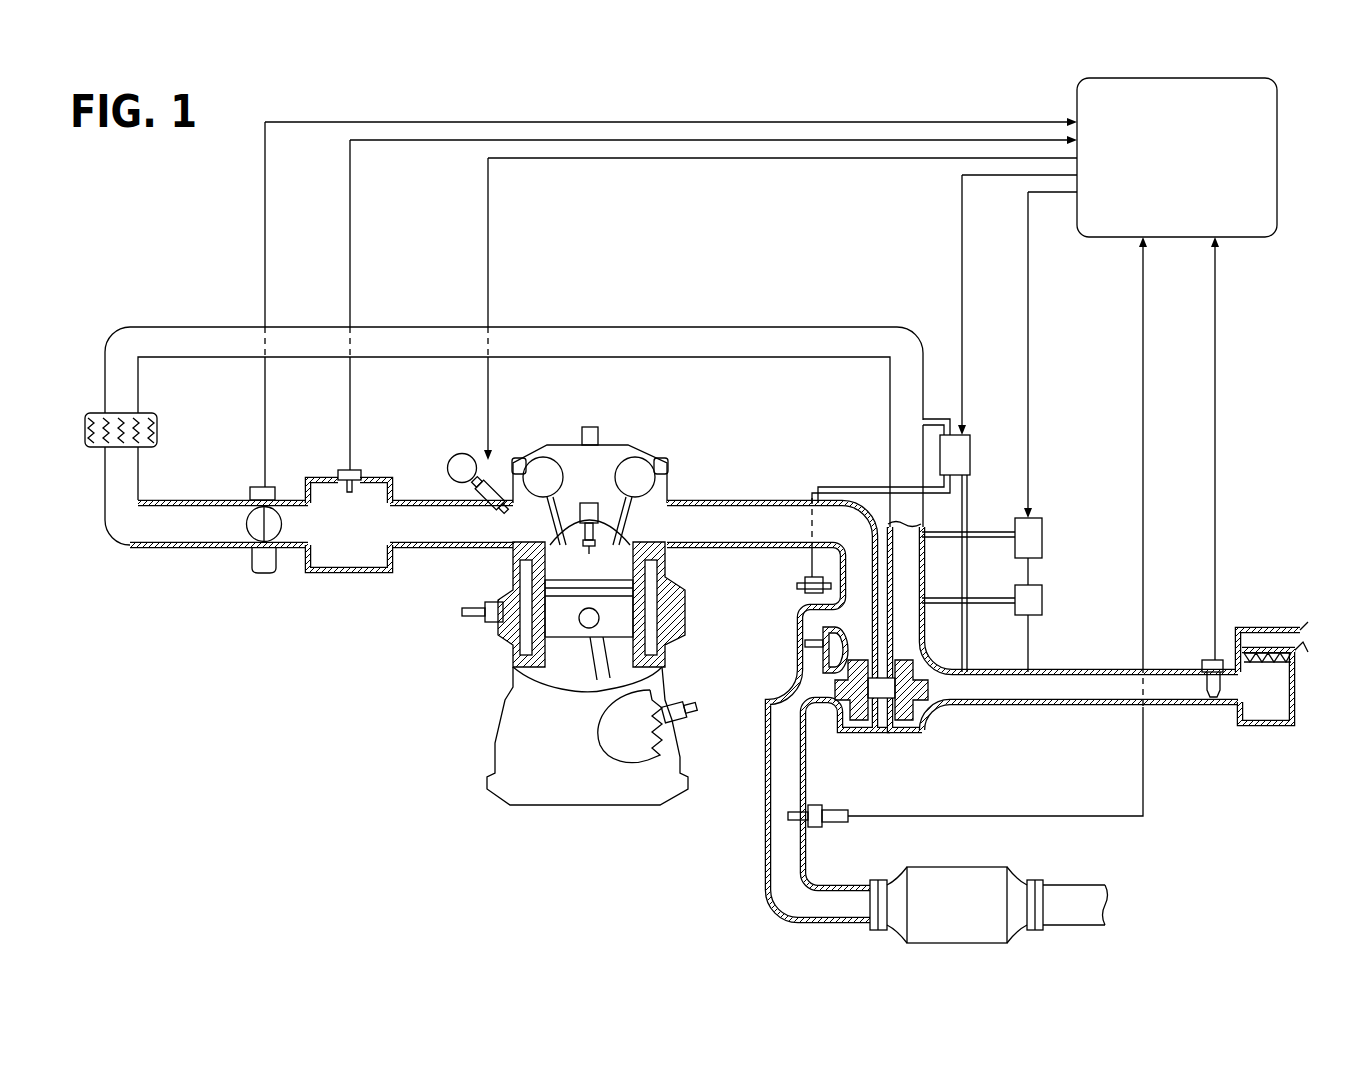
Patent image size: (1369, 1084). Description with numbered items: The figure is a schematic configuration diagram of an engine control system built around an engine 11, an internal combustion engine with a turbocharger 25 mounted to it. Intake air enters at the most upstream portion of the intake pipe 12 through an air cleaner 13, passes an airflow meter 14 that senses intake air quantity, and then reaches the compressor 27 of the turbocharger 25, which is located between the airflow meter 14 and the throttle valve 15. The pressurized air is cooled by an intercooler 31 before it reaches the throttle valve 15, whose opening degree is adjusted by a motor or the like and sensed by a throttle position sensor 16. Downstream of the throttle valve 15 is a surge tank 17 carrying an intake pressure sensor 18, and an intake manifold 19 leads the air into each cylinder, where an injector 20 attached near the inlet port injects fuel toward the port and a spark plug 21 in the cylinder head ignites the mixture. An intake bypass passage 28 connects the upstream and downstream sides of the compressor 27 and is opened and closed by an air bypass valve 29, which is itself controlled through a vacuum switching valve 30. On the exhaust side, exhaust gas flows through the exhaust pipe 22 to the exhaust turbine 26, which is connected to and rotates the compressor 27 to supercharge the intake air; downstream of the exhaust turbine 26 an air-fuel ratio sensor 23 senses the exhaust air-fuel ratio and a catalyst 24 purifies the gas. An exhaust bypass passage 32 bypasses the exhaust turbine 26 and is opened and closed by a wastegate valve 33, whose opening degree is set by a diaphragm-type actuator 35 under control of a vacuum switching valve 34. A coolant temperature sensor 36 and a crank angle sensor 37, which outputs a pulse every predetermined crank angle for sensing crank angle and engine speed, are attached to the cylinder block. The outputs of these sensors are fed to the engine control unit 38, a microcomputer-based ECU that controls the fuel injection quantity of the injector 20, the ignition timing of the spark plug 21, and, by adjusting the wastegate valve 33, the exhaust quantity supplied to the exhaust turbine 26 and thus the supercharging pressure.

The engine 11 is at (492, 707).
The intake pipe 12 is at (1168, 706).
The air cleaner 13 is at (1272, 650).
The airflow meter 14 is at (1206, 658).
The throttle valve 15 is at (272, 528).
The throttle position sensor 16 is at (258, 487).
The surge tank 17 is at (386, 480).
The intake pressure sensor 18 is at (345, 470).
The intake manifold 19 is at (425, 549).
The injector 20 is at (462, 500).
The spark plug 21 is at (612, 545).
The exhaust pipe 22 is at (760, 500).
The air-fuel ratio sensor 23 is at (838, 828).
The catalyst 24 is at (985, 866).
The turbocharger 25 is at (910, 737).
The exhaust turbine 26 is at (836, 718).
The compressor 27 is at (924, 712).
The intake bypass passage 28 is at (1032, 636).
The air bypass valve 29 is at (1043, 598).
The vacuum switching valve 30 is at (1043, 538).
The intercooler 31 is at (158, 432).
The exhaust bypass passage 32 is at (797, 625).
The wastegate valve 33 is at (803, 652).
The vacuum switching valve 34 is at (972, 455).
The diaphragm-type actuator 35 is at (802, 580).
The coolant temperature sensor 36 is at (488, 622).
The crank angle sensor 37 is at (690, 715).
The engine control unit 38 is at (1278, 158).